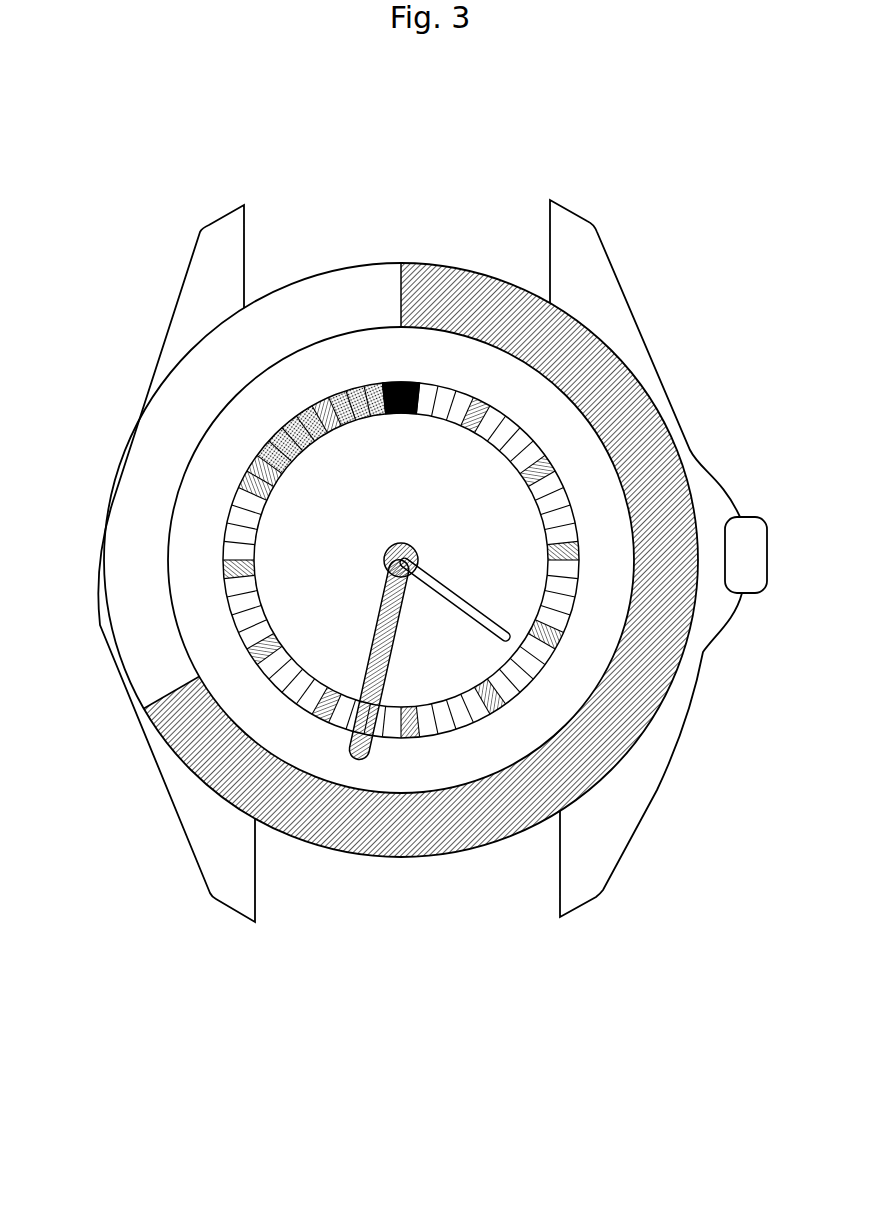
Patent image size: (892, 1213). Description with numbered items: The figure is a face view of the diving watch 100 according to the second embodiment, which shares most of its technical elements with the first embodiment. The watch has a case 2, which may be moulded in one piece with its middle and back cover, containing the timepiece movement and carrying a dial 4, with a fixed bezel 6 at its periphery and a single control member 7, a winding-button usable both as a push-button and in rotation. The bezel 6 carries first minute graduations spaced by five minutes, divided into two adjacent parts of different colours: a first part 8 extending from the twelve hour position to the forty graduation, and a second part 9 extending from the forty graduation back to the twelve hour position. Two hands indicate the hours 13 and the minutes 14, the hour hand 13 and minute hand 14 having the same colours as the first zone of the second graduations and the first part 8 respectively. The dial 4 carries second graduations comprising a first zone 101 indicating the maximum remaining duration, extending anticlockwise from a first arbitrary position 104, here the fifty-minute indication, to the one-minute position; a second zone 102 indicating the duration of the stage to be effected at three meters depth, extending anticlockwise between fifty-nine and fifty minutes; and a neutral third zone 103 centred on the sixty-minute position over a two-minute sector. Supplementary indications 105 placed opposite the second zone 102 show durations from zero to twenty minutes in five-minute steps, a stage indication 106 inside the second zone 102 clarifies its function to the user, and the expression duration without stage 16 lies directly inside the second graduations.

The case 2 is at (703, 474).
The dial 4 is at (545, 393).
The fixed bezel 6 is at (702, 658).
The control member 7 is at (752, 538).
The first part of the first graduations 8 is at (607, 760).
The second part of the first graduations 9 is at (168, 655).
The hour hand 13 is at (463, 604).
The minute hand 14 is at (393, 647).
The expression duration without stage 16 is at (346, 650).
The diving watch 100 is at (645, 1000).
The first zone of the second graduations 101 is at (237, 608).
The second zone of the second graduations 102 is at (262, 453).
The third zone of the second graduations 103 is at (418, 387).
The first arbitrary position 104 is at (240, 492).
The supplementary indications 105 is at (308, 374).
The indication STAGE 3m 106 is at (372, 454).